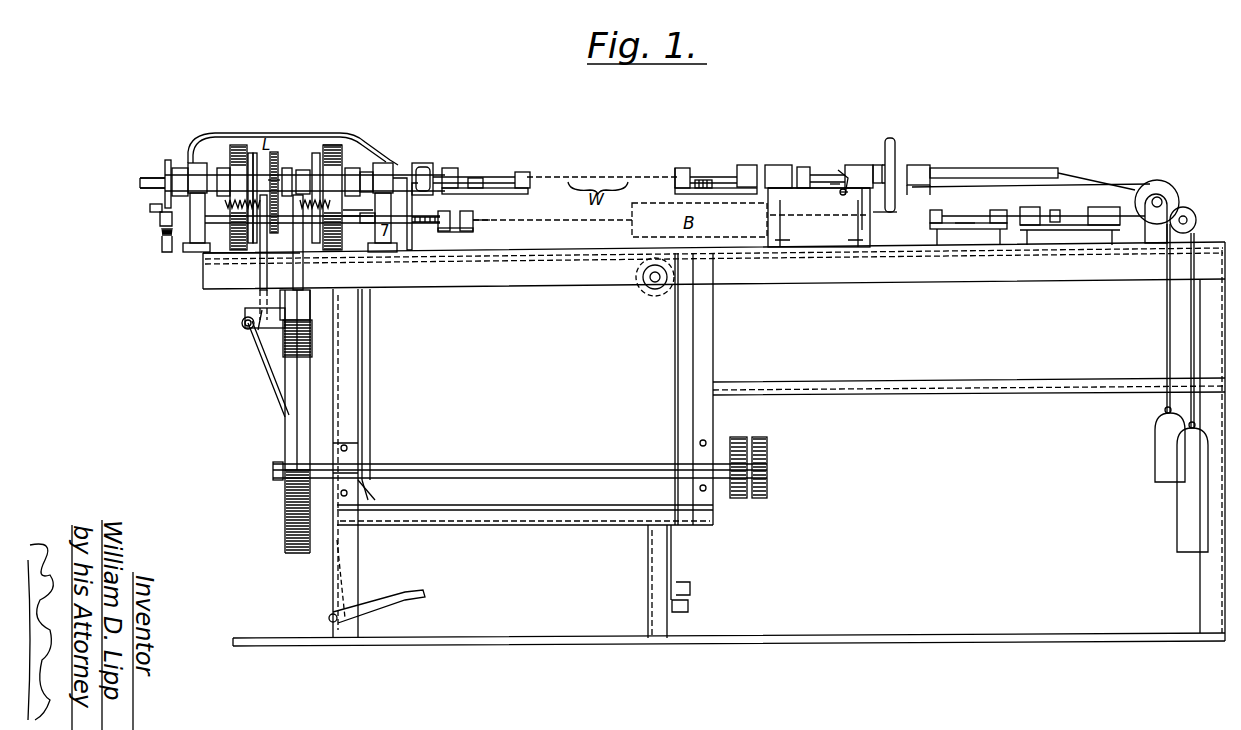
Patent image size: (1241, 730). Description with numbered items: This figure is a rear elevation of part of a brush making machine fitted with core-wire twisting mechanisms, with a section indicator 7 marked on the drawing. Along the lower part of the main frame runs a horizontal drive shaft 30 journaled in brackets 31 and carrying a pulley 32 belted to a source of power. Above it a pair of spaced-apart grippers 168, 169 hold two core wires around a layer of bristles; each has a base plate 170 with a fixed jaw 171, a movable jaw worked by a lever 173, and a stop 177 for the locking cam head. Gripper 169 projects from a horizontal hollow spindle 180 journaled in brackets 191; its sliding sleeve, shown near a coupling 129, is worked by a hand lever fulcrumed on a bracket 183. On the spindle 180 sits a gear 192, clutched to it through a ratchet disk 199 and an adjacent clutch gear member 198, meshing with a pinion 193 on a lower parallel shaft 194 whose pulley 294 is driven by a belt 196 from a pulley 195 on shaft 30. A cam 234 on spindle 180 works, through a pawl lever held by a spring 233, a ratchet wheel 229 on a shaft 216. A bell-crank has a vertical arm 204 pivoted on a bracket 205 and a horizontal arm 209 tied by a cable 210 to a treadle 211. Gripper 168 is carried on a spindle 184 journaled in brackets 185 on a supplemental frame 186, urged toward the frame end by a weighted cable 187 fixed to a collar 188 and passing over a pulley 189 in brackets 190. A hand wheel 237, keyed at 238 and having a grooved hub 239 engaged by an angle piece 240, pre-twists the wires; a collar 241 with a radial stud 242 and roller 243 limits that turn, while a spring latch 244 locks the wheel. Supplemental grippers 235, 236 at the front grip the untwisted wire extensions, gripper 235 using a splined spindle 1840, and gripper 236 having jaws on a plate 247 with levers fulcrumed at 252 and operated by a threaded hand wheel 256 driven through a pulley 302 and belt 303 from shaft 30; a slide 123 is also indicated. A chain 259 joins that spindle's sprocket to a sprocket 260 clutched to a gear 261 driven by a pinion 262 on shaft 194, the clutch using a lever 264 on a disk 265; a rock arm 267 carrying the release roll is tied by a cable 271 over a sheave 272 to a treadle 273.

The section line 7 is at (160, 222).
The horizontal drive shaft 30 is at (558, 475).
The brackets 31 is at (360, 470).
The pulley 32 is at (768, 495).
The slide 123 is at (965, 230).
The coupling 129 is at (420, 165).
The gripper 168 is at (666, 171).
The gripper 169 is at (527, 175).
The base plate 170 is at (490, 190).
The fixed jaw 171 is at (522, 195).
The lever 173 is at (705, 180).
The stop 177 is at (748, 165).
The horizontal hollow spindle 180 is at (140, 182).
The bracket 183 is at (378, 223).
The horizontal spindle 184 is at (806, 167).
The brackets 185 is at (778, 165).
The supplemental frame 186 is at (819, 202).
The weighted cable 187 is at (1015, 185).
The spindle 1840 is at (1132, 195).
The collar 188 is at (910, 196).
The pulley 189 is at (1158, 182).
The brackets 190 is at (1153, 232).
The brackets 191 is at (196, 170).
The gear 192 is at (333, 143).
The pinion 193 is at (292, 296).
The lower parallel shaft 194 is at (353, 212).
The pulley 195 is at (285, 550).
The belt 196 is at (285, 520).
The gear 198 is at (332, 148).
The ratchet disk 199 is at (316, 160).
The vertical arm 204 is at (300, 312).
The bracket 205 is at (276, 320).
The horizontal arm 209 is at (246, 327).
The cable 210 is at (272, 388).
The treadle 211 is at (332, 612).
The shaft 216 is at (150, 208).
The ratchet wheel 229 is at (162, 224).
The spring 233 is at (165, 237).
The cam 234 is at (168, 158).
The supplemental gripper 235 is at (935, 224).
The supplemental gripper 236 is at (455, 235).
The hand wheel 237 is at (893, 160).
The key 238 is at (905, 170).
The grooved hub 239 is at (893, 168).
The angle piece 240 is at (860, 165).
The collar 241 is at (835, 187).
The radial stud 242 is at (843, 178).
The roller 243 is at (842, 196).
The spring latch 244 is at (870, 232).
The plate 247 is at (475, 235).
The fulcrum 252 is at (428, 228).
The hand wheel 256 is at (408, 200).
The chain 259 is at (277, 165).
The sprocket 260 is at (275, 155).
The gear 261 is at (238, 148).
The pinion 262 is at (240, 258).
The clutch lever 264 is at (251, 158).
The disk 265 is at (256, 170).
The rock arm 267 is at (248, 312).
The cable 271 is at (245, 262).
The sheave 272 is at (655, 286).
The treadle 273 is at (688, 592).
The pulley 294 is at (279, 180).
The pulley 302 is at (375, 500).
The belt 303 is at (370, 495).